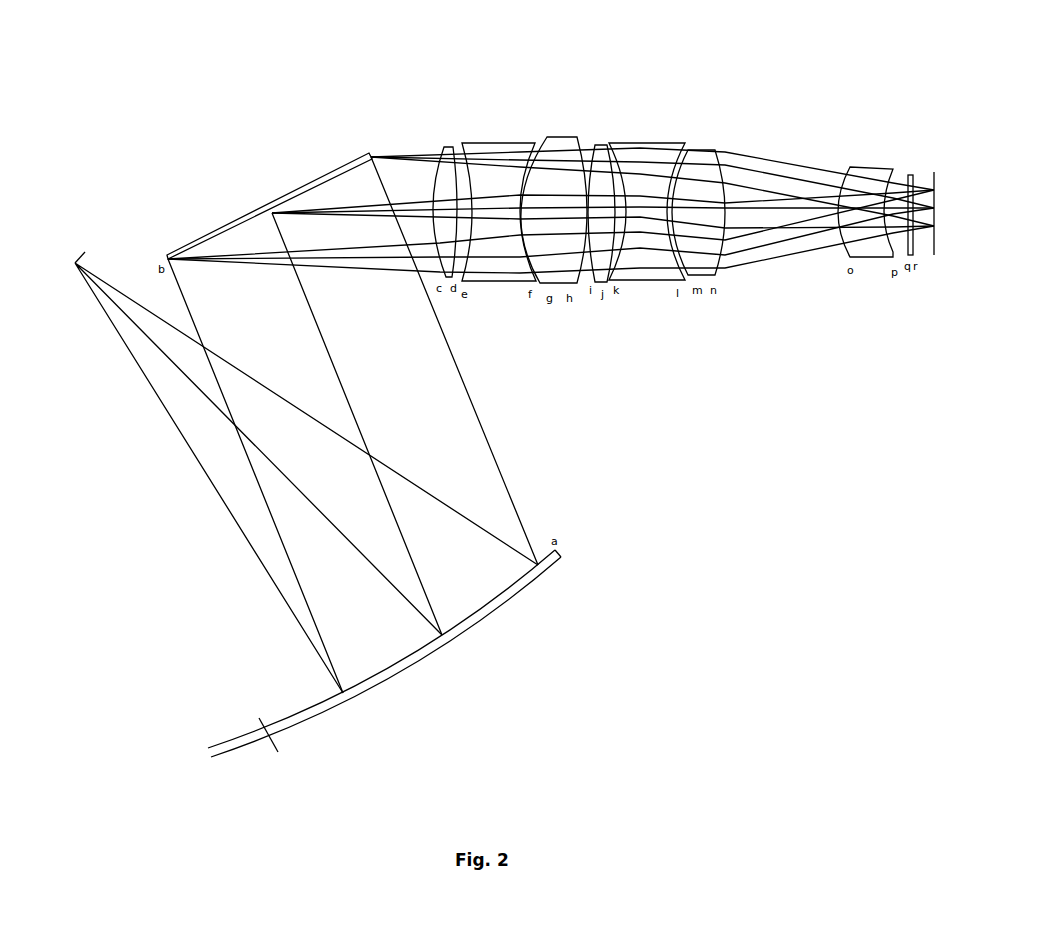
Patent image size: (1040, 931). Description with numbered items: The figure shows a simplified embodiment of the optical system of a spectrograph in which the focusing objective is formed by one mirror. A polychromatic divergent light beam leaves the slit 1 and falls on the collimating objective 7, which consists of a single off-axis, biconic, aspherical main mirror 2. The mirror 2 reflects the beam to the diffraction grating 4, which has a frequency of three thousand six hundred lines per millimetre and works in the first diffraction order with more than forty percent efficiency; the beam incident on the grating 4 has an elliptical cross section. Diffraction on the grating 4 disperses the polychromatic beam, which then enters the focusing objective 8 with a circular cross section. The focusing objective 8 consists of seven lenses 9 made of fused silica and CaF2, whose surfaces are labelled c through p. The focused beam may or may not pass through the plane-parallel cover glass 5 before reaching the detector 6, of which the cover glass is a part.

The slit 1 is at (63, 272).
The off-axis biconic aspherical mirror 2 is at (512, 596).
The diffraction grating 4 is at (212, 238).
The cover glass 5 is at (907, 180).
The detector 6 is at (937, 192).
The collimating objective 7 is at (396, 686).
The focusing objective 8 is at (667, 197).
The lenses 9 is at (643, 309).